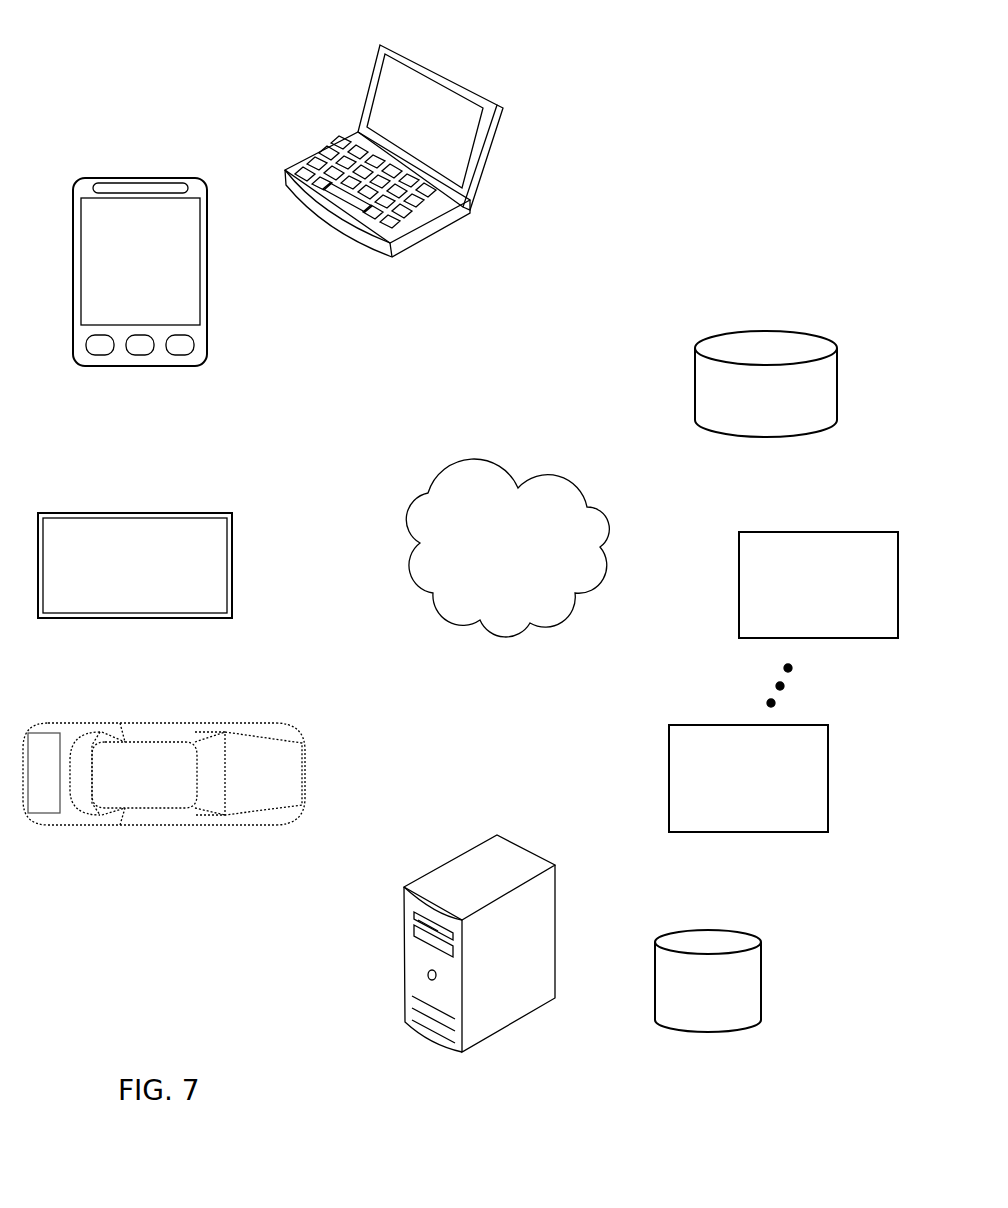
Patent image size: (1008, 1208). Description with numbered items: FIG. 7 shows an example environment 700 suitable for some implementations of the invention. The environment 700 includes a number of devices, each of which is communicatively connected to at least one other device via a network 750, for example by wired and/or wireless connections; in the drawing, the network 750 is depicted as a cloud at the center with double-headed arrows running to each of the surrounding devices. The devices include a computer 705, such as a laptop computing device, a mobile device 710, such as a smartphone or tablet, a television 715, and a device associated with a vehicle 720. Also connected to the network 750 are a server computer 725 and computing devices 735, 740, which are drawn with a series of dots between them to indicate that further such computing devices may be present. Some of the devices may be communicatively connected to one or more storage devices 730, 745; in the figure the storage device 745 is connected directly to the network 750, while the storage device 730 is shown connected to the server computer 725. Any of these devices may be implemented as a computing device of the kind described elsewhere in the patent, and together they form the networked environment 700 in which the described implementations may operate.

The environment 700 is at (160, 42).
The computer 705 is at (468, 475).
The mobile device 710 is at (430, 500).
The television 715 is at (415, 567).
The device associated with a vehicle 720 is at (443, 618).
The server computer 725 is at (502, 640).
The storage device 730 is at (558, 980).
The computing device 735 is at (572, 627).
The computing device 740 is at (605, 570).
The storage device 745 is at (572, 485).
The network 750 is at (507, 548).